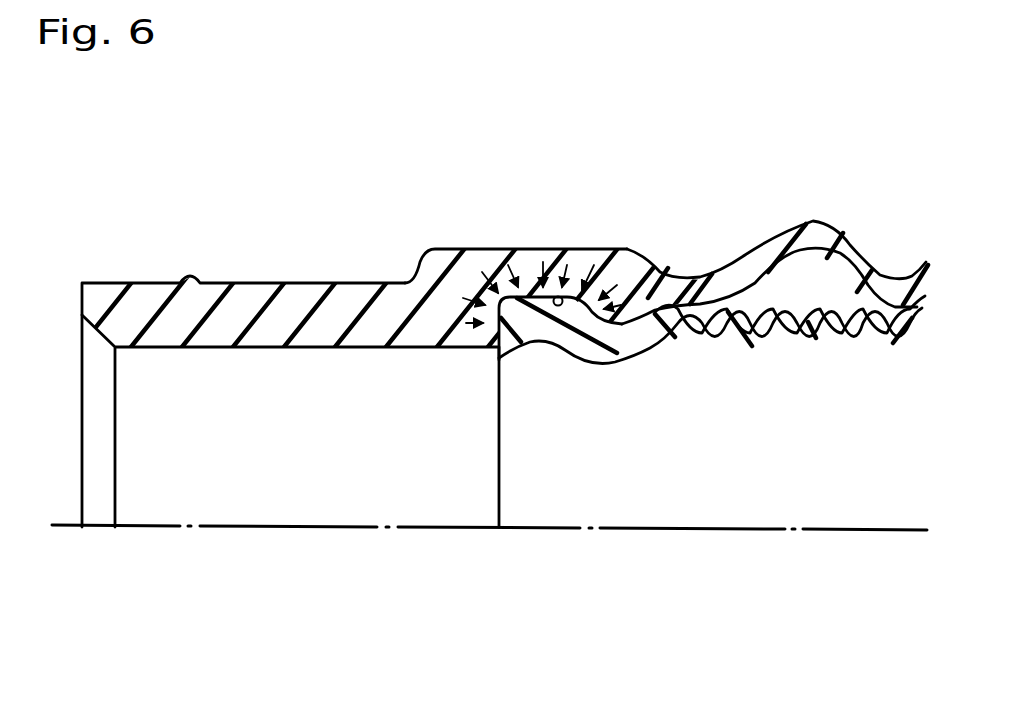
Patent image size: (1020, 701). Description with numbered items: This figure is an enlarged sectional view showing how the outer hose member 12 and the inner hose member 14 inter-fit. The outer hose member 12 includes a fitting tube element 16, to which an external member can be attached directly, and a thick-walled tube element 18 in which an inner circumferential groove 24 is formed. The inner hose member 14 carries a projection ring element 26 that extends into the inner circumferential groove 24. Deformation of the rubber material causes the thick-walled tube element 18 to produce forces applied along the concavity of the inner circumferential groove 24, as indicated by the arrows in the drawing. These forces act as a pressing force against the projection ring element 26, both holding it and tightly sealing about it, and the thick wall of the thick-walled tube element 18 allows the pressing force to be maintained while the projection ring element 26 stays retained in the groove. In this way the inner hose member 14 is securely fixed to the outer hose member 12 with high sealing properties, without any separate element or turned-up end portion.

The outer hose member 12 is at (683, 268).
The inner hose member 14 is at (637, 356).
The fitting tube element 16 is at (247, 296).
The thick-walled tube element 18 is at (487, 263).
The inner circumferential groove 24 is at (563, 298).
The projection ring element 26 is at (560, 320).